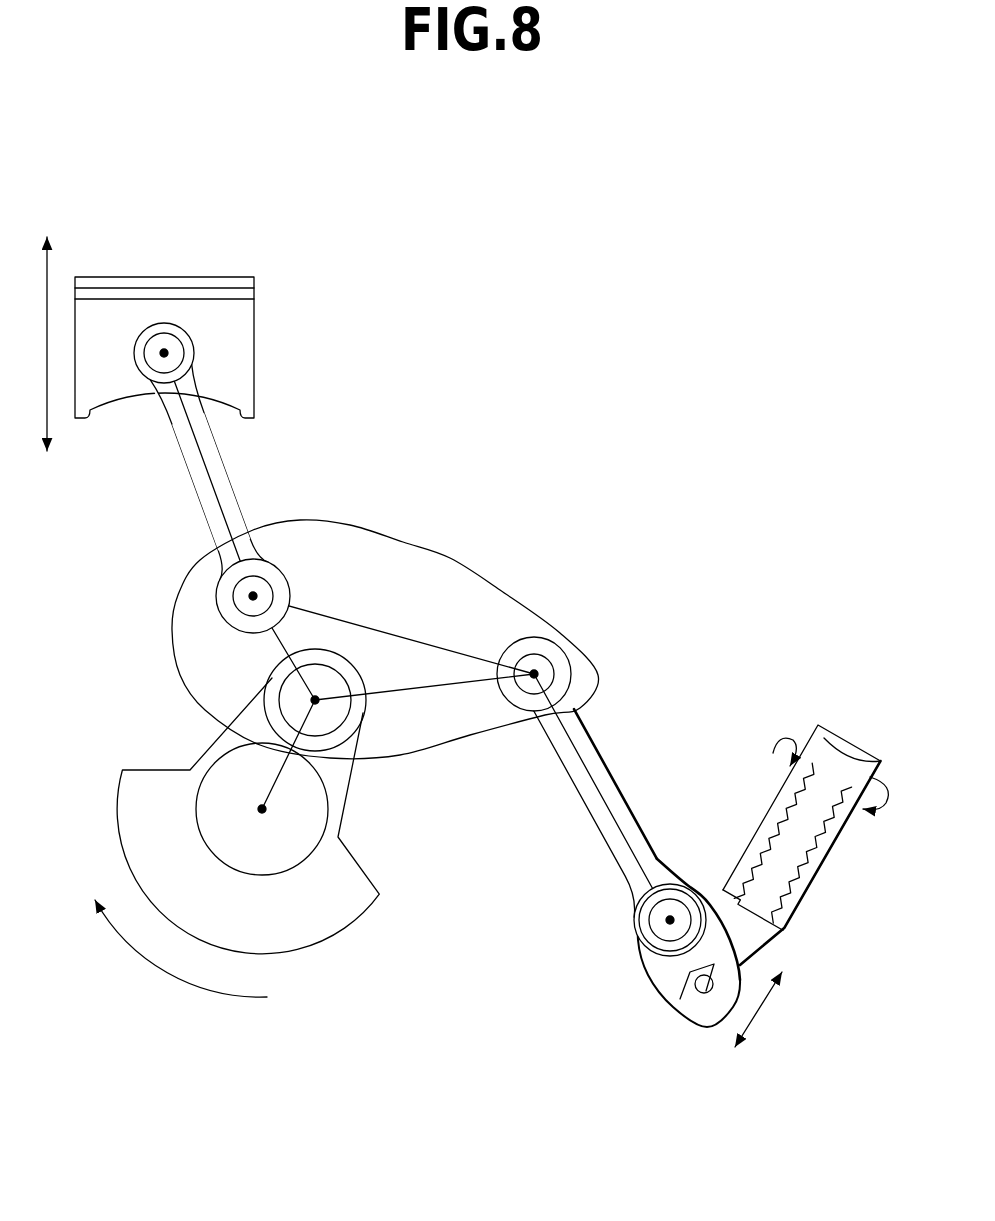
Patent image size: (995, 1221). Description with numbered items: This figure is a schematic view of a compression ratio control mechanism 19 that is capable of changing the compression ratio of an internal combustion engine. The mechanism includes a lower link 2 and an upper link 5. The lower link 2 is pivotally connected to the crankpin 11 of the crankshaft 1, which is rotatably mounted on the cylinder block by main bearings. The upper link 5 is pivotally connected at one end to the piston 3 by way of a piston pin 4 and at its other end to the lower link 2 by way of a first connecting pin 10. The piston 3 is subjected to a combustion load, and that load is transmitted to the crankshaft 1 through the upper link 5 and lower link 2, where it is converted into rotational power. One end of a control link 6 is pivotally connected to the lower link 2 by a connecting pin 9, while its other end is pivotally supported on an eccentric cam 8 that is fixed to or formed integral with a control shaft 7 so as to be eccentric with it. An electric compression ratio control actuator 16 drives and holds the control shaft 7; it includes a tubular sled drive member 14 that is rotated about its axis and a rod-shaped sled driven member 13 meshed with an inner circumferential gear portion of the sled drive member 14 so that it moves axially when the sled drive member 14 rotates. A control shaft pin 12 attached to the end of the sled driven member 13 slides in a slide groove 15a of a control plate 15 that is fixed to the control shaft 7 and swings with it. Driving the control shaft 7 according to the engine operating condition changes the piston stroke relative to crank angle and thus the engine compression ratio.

The crankshaft 1 is at (225, 790).
The lower link 2 is at (378, 567).
The piston 3 is at (238, 336).
The piston pin 4 is at (164, 349).
The upper link 5 is at (230, 477).
The control link 6 is at (602, 770).
The control shaft 7 is at (650, 953).
The eccentric cam 8 is at (647, 933).
The connecting pin 9 is at (550, 670).
The first connecting pin 10 is at (240, 602).
The crankpin 11 is at (331, 717).
The control shaft pin 12 is at (713, 993).
The sled driven member 13 is at (795, 842).
The sled drive member 14 is at (817, 866).
The control plate 15 is at (677, 977).
The slide groove 15a is at (707, 1000).
The compression ratio control actuator 16 is at (796, 962).
The compression ratio control mechanism 19 is at (483, 436).